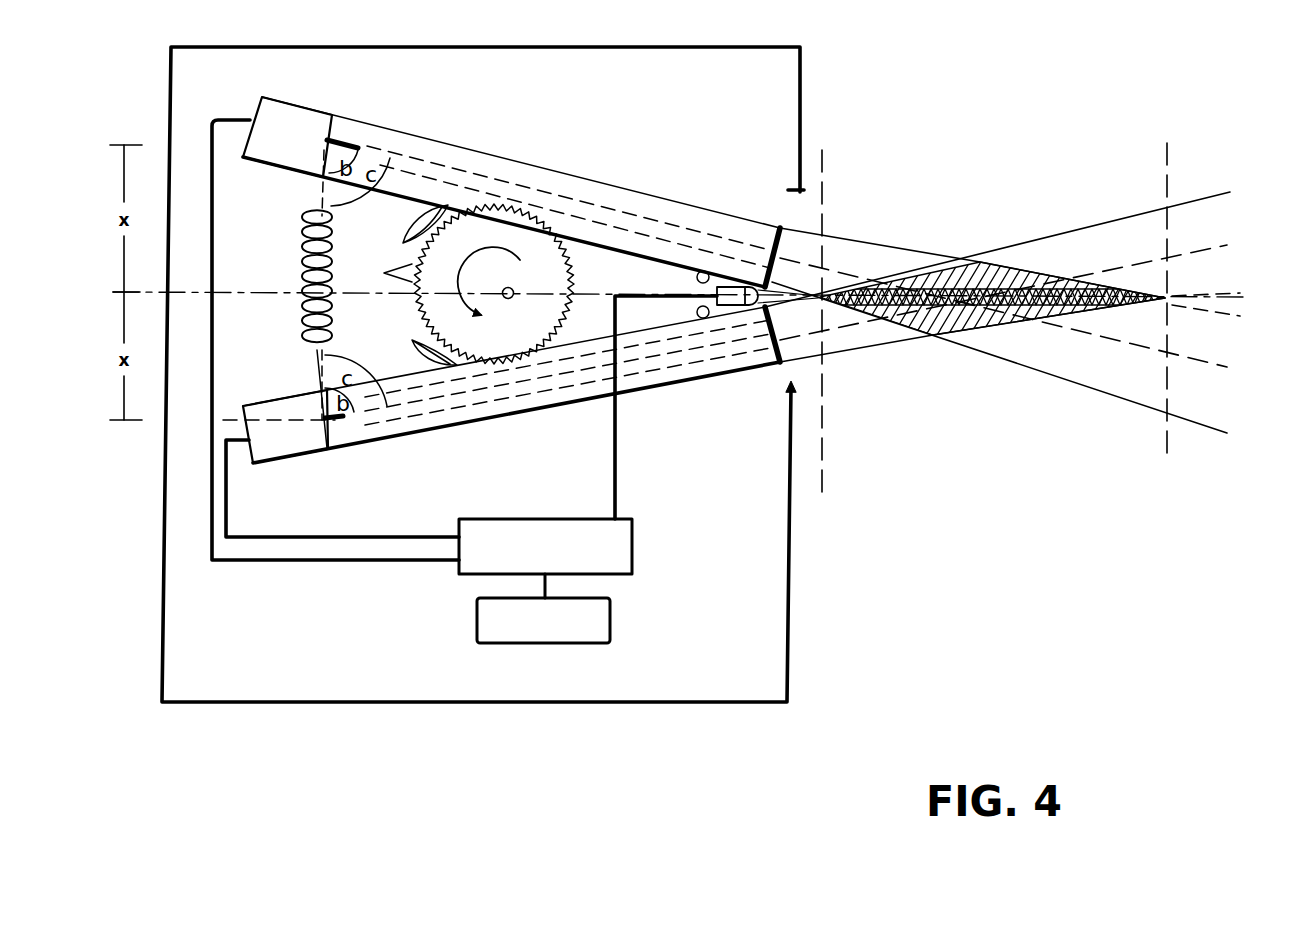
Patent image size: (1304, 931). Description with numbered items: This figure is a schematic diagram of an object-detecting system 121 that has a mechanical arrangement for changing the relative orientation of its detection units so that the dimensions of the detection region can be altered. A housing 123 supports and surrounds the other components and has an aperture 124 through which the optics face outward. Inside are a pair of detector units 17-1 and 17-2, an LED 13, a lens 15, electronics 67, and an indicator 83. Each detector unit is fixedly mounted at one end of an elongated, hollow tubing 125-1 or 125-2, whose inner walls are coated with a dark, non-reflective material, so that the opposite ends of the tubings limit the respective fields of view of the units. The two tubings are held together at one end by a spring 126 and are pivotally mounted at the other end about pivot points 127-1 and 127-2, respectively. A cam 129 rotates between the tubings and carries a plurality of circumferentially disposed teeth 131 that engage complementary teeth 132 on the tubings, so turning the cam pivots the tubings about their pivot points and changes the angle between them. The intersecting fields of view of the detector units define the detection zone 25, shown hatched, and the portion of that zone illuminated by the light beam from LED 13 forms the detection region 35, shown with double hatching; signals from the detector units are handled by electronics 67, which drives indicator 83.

The system 121 is at (258, 722).
The housing 123 is at (705, 703).
The aperture 124 is at (797, 213).
The detector unit 17-1 is at (310, 125).
The detector unit 17-2 is at (282, 447).
The elongated hollow tubing 125-1 is at (518, 164).
The elongated hollow tubing 125-2 is at (458, 424).
The spring 126 is at (300, 283).
The cam 129 is at (455, 260).
The teeth 131 is at (378, 277).
The complementary teeth 132 is at (404, 243).
The pivot point 127-1 is at (696, 281).
The pivot point 127-2 is at (697, 313).
The LED 13 is at (733, 306).
The lens 15 is at (758, 306).
The detection zone 25 is at (930, 332).
The detection region 35 is at (950, 290).
The electronics 67 is at (632, 560).
The indicator 83 is at (610, 625).